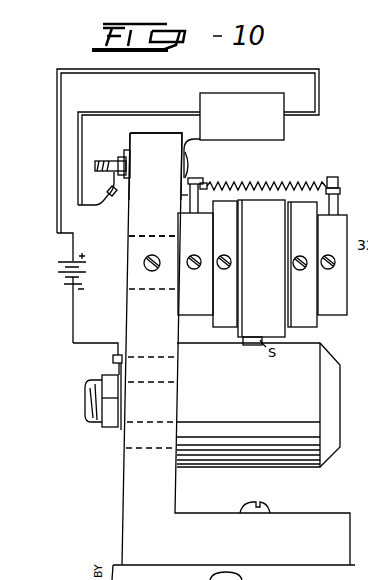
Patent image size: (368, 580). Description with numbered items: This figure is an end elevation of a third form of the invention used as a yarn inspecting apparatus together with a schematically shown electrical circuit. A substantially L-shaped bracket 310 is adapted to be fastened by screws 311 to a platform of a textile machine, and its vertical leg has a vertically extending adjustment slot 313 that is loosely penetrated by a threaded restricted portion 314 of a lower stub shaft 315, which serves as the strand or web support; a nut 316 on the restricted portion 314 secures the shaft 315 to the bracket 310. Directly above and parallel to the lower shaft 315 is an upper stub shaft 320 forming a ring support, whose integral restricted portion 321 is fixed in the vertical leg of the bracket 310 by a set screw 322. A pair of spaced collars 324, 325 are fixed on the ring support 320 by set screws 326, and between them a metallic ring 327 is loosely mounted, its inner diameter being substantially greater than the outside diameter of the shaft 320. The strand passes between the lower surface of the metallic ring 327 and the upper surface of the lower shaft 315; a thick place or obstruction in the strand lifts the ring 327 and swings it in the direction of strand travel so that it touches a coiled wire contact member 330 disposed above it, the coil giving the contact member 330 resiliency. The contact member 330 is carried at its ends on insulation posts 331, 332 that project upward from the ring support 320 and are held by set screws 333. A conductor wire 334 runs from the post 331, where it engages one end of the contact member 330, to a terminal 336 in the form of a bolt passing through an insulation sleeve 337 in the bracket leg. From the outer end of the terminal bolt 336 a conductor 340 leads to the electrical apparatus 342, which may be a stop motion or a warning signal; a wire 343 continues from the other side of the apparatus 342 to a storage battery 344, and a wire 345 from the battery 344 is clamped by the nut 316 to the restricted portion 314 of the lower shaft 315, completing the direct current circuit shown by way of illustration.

The bracket 310 is at (122, 513).
The screws 311 is at (263, 506).
The adjustment slot 313 is at (128, 450).
The restricted portion 314 is at (258, 405).
The lower stub shaft 315 is at (207, 462).
The nut 316 is at (110, 376).
The upper stub shaft 320 is at (333, 316).
The restricted portion 321 is at (132, 238).
The set screw 322 is at (160, 268).
The collar 324 is at (214, 304).
The collar 325 is at (308, 308).
The set screws 326 is at (227, 256).
The metallic ring 327 is at (245, 340).
The coiled wire contact member 330 is at (266, 176).
The insulation post 331 is at (205, 180).
The insulation post 332 is at (335, 178).
The set screws 333 is at (201, 265).
The conductor wire 334 is at (182, 195).
The terminal 336 is at (188, 165).
The insulation sleeve 337 is at (182, 136).
The conductor 340 is at (78, 150).
The electrical apparatus 342 is at (284, 132).
The wire 343 is at (319, 90).
The storage battery 344 is at (80, 278).
The wire 345 is at (73, 333).